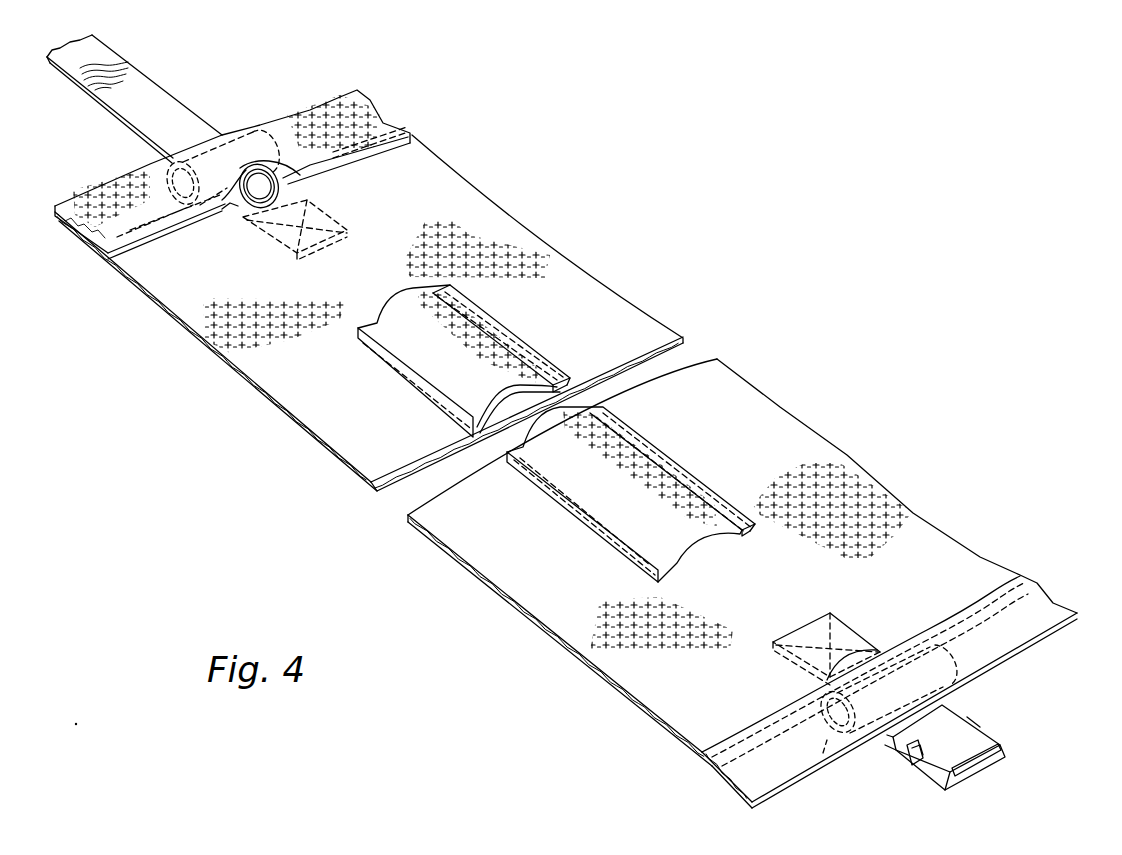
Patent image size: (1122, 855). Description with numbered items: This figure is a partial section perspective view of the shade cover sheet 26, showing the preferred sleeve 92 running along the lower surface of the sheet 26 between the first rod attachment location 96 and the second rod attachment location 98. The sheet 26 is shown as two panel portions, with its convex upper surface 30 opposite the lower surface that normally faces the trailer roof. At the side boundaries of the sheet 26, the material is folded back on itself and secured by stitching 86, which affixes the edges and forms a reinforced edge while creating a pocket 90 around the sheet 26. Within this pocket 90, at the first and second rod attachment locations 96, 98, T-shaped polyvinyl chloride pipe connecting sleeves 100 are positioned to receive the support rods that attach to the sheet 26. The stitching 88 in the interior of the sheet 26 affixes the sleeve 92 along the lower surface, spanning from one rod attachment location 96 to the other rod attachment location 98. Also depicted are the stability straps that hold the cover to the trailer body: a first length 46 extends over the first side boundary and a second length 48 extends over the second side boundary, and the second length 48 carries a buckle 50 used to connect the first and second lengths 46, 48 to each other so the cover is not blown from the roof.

The sheet 26 is at (607, 307).
The convex upper surface 30 is at (513, 541).
The first length 46 is at (166, 122).
The second length 48 is at (943, 705).
The buckle 50 is at (956, 751).
The stitching 86 is at (377, 133).
The stitching 88 is at (497, 327).
The pocket 90 is at (232, 207).
The sleeve 92 is at (400, 293).
The first rod attachment location 96 is at (283, 197).
The second rod attachment location 98 is at (854, 627).
The connecting sleeve 100 is at (825, 754).